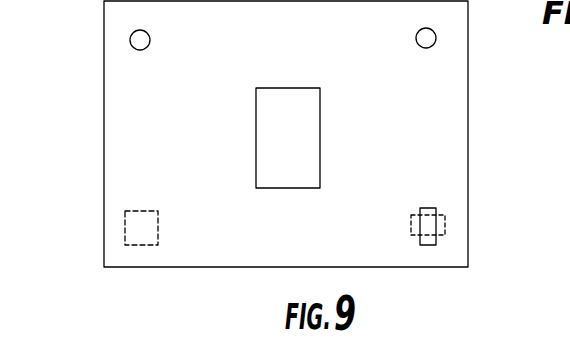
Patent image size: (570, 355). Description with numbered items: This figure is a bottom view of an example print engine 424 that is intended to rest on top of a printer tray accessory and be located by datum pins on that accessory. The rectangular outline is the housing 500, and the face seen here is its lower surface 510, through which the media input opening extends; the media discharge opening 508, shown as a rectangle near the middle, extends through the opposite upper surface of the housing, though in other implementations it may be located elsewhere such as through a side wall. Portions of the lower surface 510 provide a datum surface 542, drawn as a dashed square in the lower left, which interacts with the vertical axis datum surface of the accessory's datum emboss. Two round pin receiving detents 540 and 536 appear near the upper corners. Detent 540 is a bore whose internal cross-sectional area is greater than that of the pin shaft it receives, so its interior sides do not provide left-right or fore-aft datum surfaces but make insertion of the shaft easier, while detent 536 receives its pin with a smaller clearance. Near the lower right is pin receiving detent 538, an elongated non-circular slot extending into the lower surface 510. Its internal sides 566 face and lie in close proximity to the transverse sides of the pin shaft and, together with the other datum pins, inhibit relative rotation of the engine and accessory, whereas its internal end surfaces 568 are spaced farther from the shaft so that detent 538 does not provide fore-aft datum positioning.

The print engine 424 is at (63, 109).
The housing 500 is at (468, 149).
The discharge opening 508 is at (321, 143).
The lower surface 510 is at (324, 46).
The pin receiving detent 536 is at (434, 46).
The pin receiving detent 538 is at (432, 204).
The pin receiving detent 540 is at (148, 47).
The datum surface 542 is at (143, 210).
The internal sides 566 is at (420, 243).
The internal end surfaces 568 is at (425, 208).